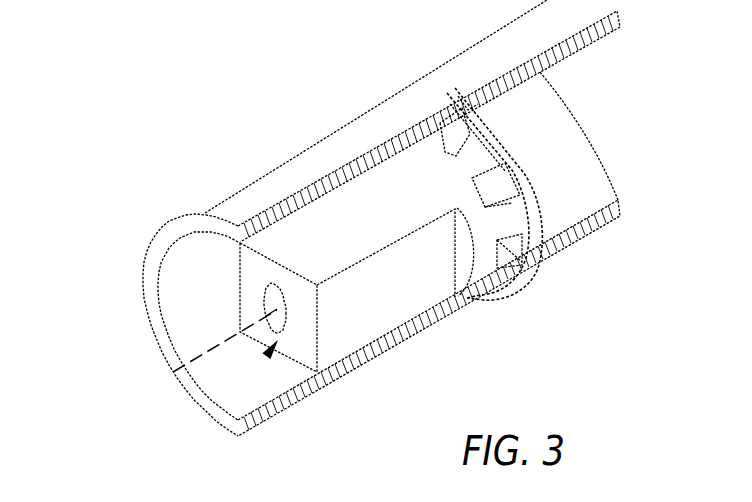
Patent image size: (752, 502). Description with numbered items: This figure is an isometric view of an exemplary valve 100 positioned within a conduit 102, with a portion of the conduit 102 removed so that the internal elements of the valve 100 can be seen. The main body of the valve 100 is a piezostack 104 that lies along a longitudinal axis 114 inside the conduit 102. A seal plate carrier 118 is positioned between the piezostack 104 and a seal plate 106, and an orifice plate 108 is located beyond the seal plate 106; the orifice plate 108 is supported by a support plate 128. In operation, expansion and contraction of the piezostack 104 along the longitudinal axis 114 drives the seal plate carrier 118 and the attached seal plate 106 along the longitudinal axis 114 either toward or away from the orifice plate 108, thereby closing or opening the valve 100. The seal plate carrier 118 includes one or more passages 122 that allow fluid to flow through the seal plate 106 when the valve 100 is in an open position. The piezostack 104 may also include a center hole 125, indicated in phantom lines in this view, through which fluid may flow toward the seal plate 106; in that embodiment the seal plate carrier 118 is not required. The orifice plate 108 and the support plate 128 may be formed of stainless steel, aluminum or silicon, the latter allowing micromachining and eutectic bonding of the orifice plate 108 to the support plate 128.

The valve 100 is at (176, 84).
The conduit 102 is at (360, 152).
The piezostack 104 is at (346, 324).
The seal plate 106 is at (536, 253).
The orifice plate 108 is at (527, 165).
The longitudinal axis 114 is at (207, 350).
The seal plate carrier 118 is at (431, 145).
The passages 122 is at (495, 182).
The center hole 125 is at (270, 352).
The support plate 128 is at (471, 108).